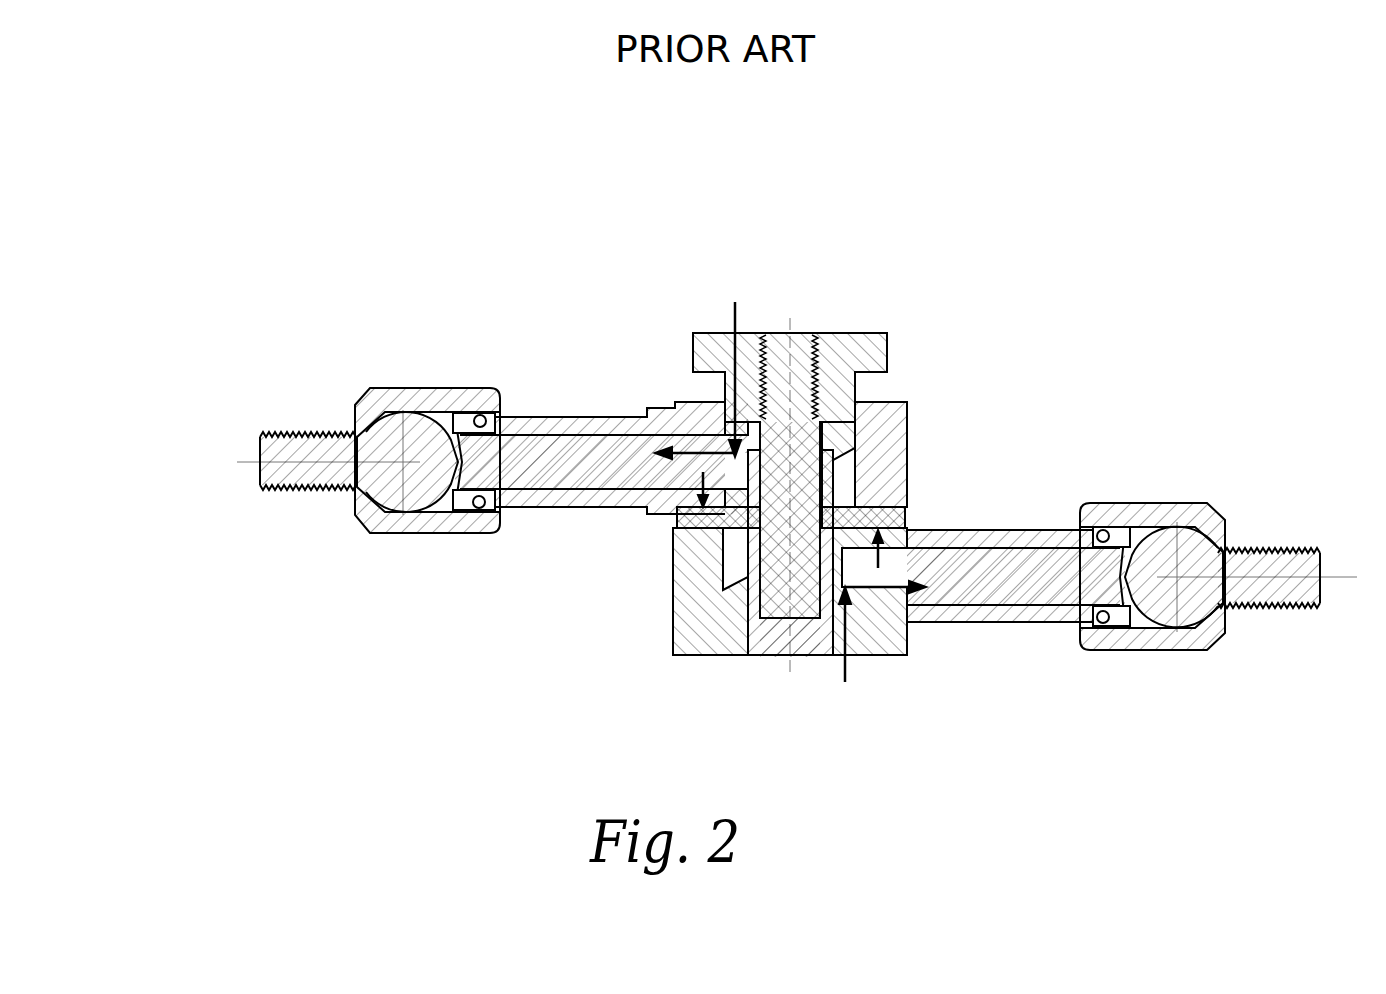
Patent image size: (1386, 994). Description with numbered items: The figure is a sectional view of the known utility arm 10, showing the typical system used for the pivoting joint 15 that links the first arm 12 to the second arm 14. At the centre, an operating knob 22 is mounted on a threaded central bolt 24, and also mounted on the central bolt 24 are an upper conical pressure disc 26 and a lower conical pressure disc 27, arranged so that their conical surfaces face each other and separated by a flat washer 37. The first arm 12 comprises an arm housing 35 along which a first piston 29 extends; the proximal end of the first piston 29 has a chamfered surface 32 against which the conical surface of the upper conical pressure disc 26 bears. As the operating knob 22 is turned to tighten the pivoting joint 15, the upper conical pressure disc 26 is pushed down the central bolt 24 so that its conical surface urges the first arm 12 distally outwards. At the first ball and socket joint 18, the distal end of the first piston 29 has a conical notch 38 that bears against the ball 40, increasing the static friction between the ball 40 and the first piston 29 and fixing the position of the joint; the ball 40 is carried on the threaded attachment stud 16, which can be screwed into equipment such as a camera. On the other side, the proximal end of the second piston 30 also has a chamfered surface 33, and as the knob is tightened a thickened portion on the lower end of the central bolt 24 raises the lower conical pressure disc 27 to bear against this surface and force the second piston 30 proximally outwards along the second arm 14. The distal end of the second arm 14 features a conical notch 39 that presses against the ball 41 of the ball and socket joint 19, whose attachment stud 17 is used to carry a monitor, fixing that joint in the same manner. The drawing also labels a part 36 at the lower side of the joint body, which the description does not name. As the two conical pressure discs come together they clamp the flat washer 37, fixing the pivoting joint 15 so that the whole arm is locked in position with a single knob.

The utility arm 10 is at (580, 285).
The first arm 12 is at (558, 487).
The second arm 14 is at (1003, 613).
The pivoting joint 15 is at (923, 262).
The attachment stud 16 is at (338, 452).
The attachment stud 17 is at (1275, 578).
The first ball and socket joint 18 is at (430, 397).
The ball and socket joint 19 is at (1133, 503).
The operating knob 22 is at (863, 337).
The threaded central bolt 24 is at (800, 600).
The upper conical pressure disc 26 is at (842, 433).
The lower conical pressure disc 27 is at (737, 600).
The first piston 29 is at (567, 442).
The second piston 30 is at (982, 560).
The chamfered surface 32 is at (733, 452).
The chamfered surface 33 is at (847, 590).
The arm housing 35 is at (873, 457).
The body side wall 36 is at (673, 602).
The flat washer 37 is at (675, 520).
The conical notch 38 is at (460, 470).
The conical notch 39 is at (1120, 587).
The ball 40 is at (380, 483).
The ball 41 is at (1193, 560).